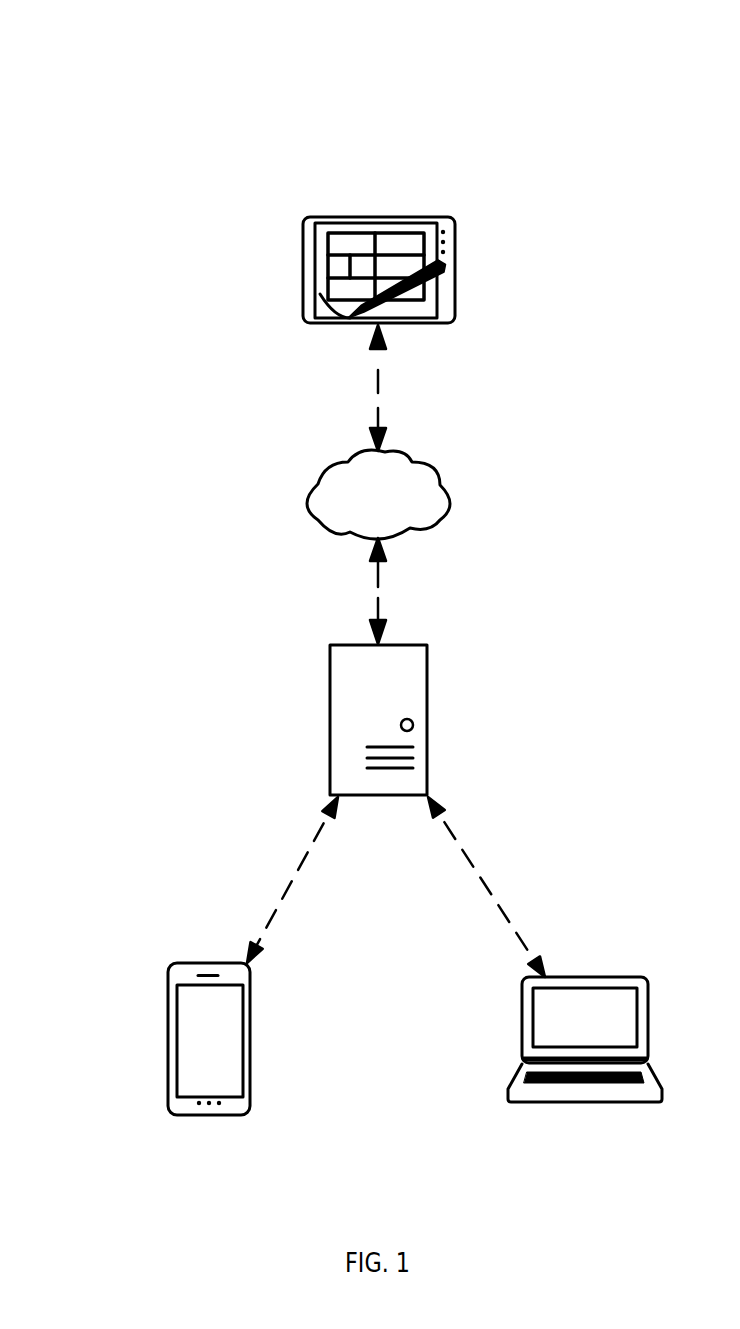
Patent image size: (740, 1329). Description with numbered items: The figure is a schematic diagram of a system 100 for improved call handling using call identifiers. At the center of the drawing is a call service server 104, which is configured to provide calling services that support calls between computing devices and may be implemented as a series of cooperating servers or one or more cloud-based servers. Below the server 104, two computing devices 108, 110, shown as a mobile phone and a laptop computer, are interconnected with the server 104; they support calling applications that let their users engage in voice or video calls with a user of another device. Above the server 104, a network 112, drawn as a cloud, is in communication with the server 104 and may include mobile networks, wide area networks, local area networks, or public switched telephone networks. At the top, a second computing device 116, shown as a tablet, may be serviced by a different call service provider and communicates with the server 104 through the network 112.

The system 100 is at (210, 114).
The call service server 104 is at (330, 720).
The computing device 108 is at (168, 1040).
The computing device 110 is at (522, 1040).
The network 112 is at (306, 495).
The second computing device 116 is at (455, 268).